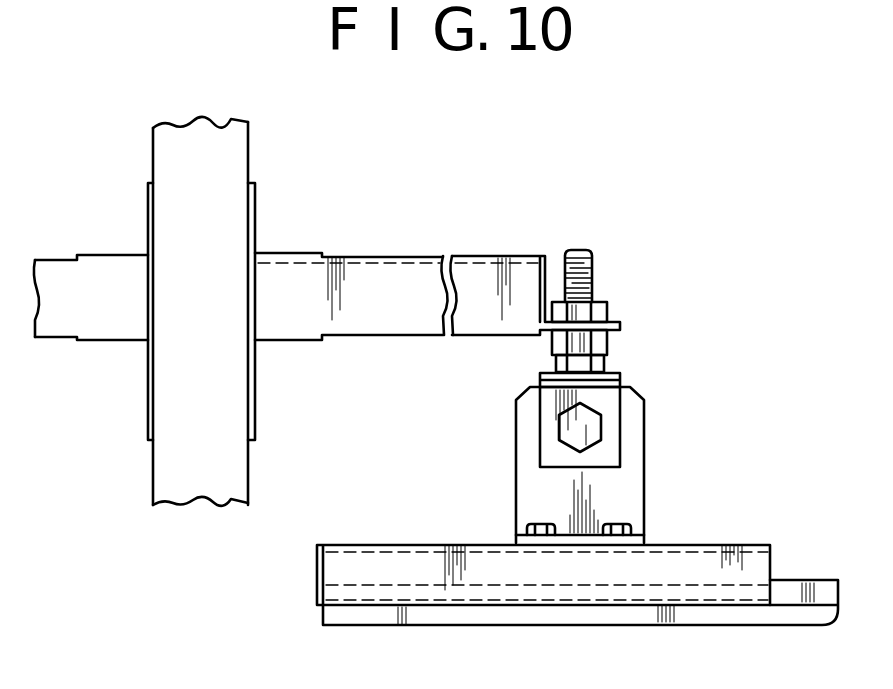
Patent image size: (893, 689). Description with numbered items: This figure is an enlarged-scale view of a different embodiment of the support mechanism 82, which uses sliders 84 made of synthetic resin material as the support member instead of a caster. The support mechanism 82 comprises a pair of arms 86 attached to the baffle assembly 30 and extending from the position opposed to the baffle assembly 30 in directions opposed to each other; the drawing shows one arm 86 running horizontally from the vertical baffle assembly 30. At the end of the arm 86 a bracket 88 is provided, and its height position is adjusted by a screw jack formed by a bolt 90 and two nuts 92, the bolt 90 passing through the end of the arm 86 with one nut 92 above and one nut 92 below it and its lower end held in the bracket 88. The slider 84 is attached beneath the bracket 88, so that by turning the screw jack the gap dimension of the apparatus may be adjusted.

The baffle assembly 30 is at (237, 144).
The arm 86 is at (66, 320).
The support mechanism 82 is at (611, 280).
The bolt 90 is at (594, 268).
The nut 92 is at (609, 312).
The bracket 88 is at (684, 541).
The slider 84 is at (440, 615).